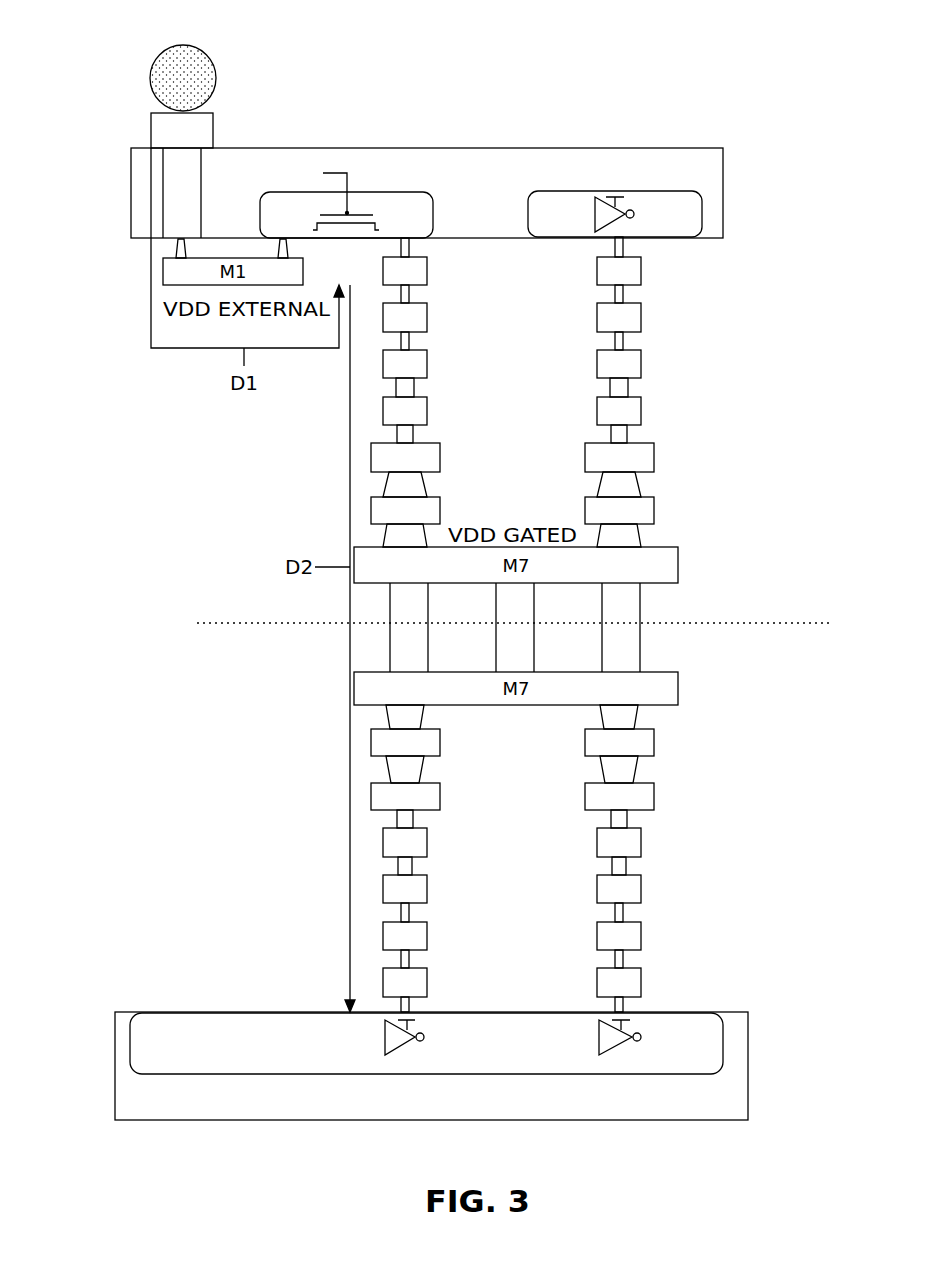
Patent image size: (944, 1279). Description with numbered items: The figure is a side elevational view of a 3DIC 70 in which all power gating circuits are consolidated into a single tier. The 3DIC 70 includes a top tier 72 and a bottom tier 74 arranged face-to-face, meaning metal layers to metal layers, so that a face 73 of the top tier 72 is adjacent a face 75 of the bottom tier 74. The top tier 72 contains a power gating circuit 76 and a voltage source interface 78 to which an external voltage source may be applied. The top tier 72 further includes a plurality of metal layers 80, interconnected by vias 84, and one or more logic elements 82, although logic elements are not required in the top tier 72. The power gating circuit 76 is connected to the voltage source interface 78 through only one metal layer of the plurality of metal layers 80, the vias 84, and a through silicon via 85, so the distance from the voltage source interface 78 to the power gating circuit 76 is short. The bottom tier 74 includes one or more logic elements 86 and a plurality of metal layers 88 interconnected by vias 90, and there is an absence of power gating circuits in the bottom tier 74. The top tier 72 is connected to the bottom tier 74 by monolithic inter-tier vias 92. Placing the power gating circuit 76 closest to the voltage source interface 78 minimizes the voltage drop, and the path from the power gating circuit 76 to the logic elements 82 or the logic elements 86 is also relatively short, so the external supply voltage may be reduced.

The 3DIC 70 is at (585, 78).
The top tier 72 is at (752, 148).
The face of the top tier 73 is at (208, 630).
The bottom tier 74 is at (752, 1120).
The face of the bottom tier 75 is at (275, 618).
The power gating circuit 76 is at (434, 205).
The voltage source interface 78 is at (208, 60).
The plurality of metal layers 80 is at (697, 243).
The logic elements 82 is at (582, 192).
The vias 84 is at (290, 242).
The through silicon via 85 is at (201, 211).
The logic elements 86 is at (622, 1074).
The plurality of metal layers 88 is at (697, 683).
The vias 90 is at (598, 710).
The monolithic inter-tier vias 92 is at (429, 602).